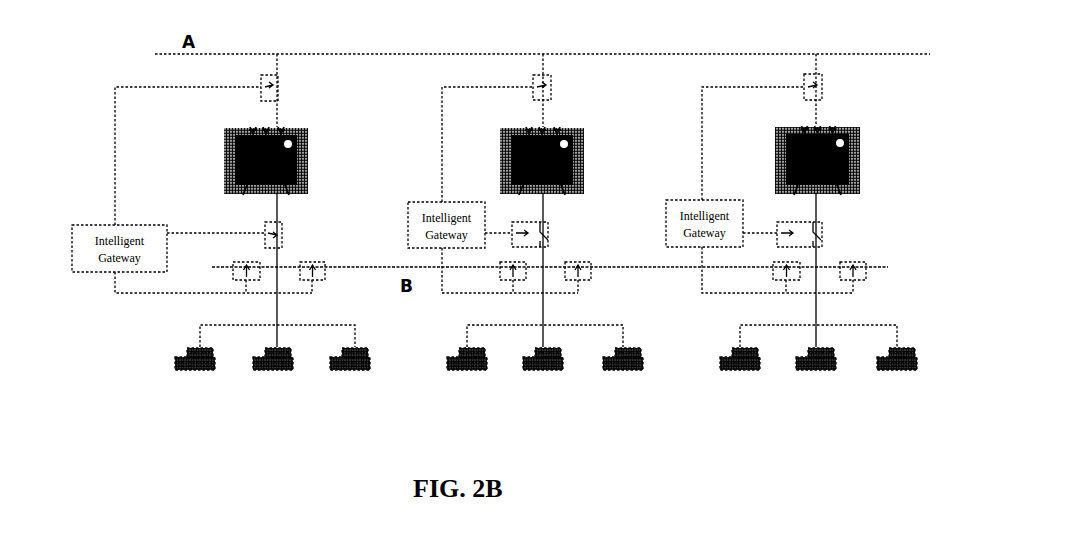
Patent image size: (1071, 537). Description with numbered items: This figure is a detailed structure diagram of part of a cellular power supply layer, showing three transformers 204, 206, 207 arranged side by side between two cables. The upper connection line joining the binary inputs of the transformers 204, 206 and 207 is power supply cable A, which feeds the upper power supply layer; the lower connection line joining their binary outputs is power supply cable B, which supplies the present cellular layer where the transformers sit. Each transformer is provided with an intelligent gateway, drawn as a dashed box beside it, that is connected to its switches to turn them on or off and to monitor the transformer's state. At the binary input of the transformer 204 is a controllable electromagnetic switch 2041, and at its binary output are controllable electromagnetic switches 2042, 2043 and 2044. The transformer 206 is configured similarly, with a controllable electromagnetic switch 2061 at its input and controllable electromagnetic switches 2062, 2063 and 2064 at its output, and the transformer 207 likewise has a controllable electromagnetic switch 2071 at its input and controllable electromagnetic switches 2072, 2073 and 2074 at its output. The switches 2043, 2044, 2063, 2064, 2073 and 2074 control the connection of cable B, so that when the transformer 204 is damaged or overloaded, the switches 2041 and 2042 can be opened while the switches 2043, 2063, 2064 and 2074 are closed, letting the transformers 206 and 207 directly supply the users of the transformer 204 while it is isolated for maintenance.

The transformer 204 is at (311, 148).
The transformer 206 is at (586, 147).
The transformer 207 is at (863, 146).
The controllable electromagnetic switch 2041 is at (279, 86).
The controllable electromagnetic switch 2042 is at (283, 233).
The controllable electromagnetic switch 2043 is at (326, 265).
The controllable electromagnetic switch 2044 is at (233, 270).
The controllable electromagnetic switch 2061 is at (552, 87).
The controllable electromagnetic switch 2062 is at (549, 237).
The controllable electromagnetic switch 2063 is at (592, 265).
The controllable electromagnetic switch 2064 is at (500, 266).
The controllable electromagnetic switch 2071 is at (823, 86).
The controllable electromagnetic switch 2072 is at (823, 240).
The controllable electromagnetic switch 2073 is at (867, 266).
The controllable electromagnetic switch 2074 is at (773, 270).